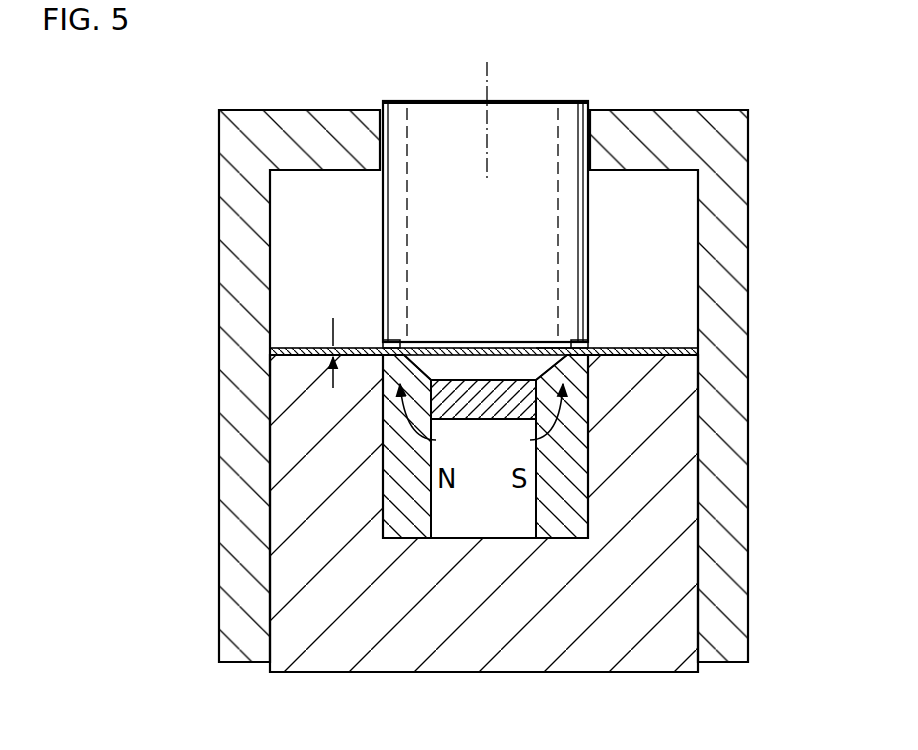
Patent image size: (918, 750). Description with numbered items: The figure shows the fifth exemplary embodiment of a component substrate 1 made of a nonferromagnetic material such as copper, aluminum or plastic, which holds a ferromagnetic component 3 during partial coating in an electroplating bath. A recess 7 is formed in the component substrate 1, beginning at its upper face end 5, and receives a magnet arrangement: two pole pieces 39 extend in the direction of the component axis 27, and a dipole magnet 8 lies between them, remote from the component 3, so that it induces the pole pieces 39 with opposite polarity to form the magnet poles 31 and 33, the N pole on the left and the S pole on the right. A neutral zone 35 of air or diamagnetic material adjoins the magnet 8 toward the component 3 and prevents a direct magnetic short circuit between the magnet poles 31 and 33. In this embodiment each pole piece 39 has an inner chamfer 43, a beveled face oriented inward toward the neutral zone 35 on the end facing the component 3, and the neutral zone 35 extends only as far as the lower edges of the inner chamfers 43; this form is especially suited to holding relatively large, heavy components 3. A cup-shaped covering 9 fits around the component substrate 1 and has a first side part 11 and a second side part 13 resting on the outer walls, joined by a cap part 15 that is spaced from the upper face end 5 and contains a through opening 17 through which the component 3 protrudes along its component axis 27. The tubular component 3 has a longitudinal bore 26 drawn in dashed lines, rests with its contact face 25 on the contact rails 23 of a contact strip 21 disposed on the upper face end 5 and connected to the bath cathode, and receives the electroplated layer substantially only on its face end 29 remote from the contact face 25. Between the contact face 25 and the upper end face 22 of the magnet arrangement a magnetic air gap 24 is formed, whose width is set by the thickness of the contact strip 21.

The component substrate 1 is at (268, 591).
The component 3 is at (491, 203).
The upper face end 5 is at (661, 349).
The recess 7 is at (586, 512).
The magnet 8 is at (445, 530).
The covering 9 is at (479, 362).
The first side part 11 is at (230, 388).
The second side part 13 is at (695, 362).
The cap part 15 is at (657, 118).
The through opening 17 is at (583, 128).
The contact strip 21 is at (287, 346).
The upper end face 22 is at (545, 346).
The contact rail 23 is at (388, 345).
The magnetic air gap 24 is at (373, 340).
The contact face 25 is at (444, 343).
The longitudinal bore 26 is at (421, 121).
The component axis 27 is at (492, 94).
The face end 29 is at (532, 101).
The magnet pole 31 is at (434, 418).
The magnet pole 33 is at (533, 418).
The neutral zone 35 is at (488, 396).
The pole piece 39 is at (545, 500).
The inner chamfer 43 is at (430, 372).